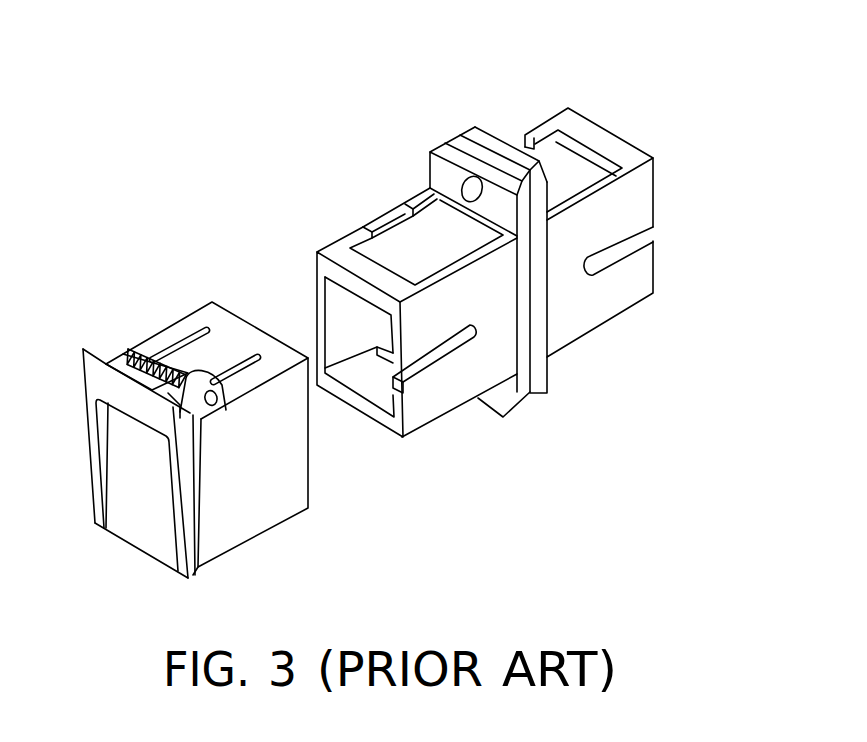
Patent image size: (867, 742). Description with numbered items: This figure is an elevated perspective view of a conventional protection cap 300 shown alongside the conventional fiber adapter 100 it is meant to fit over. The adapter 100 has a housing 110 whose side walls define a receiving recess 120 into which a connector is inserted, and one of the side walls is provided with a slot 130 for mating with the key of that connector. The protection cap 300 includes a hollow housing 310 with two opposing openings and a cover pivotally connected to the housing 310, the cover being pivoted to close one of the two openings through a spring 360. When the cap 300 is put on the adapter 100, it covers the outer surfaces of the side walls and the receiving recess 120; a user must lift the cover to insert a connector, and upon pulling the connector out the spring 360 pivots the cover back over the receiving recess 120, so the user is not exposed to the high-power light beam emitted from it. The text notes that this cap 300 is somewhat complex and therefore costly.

The fiber adapter 100 is at (577, 92).
The housing 110 is at (343, 230).
The receiving recess 120 is at (377, 370).
The slot 130 is at (427, 357).
The protection cap 300 is at (198, 237).
The hollow housing 310 is at (198, 320).
The spring 360 is at (155, 353).